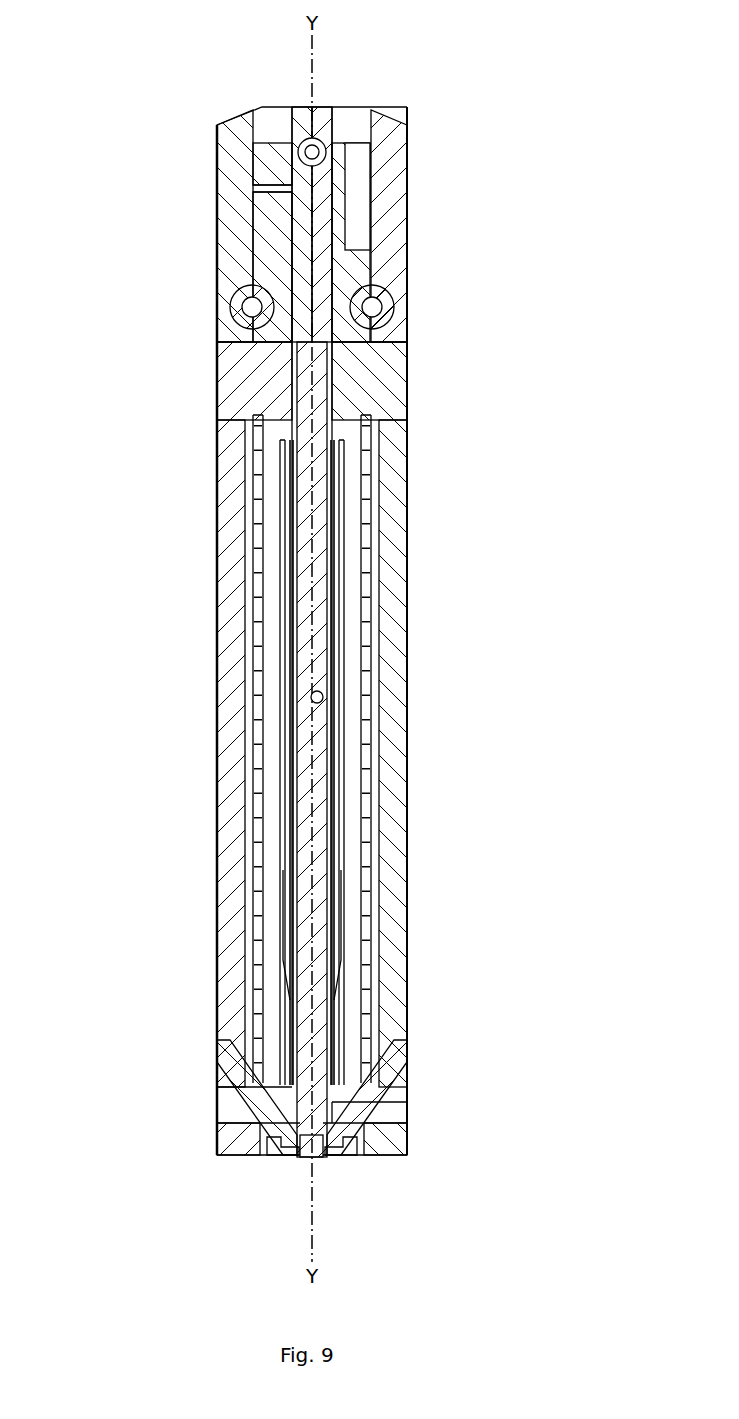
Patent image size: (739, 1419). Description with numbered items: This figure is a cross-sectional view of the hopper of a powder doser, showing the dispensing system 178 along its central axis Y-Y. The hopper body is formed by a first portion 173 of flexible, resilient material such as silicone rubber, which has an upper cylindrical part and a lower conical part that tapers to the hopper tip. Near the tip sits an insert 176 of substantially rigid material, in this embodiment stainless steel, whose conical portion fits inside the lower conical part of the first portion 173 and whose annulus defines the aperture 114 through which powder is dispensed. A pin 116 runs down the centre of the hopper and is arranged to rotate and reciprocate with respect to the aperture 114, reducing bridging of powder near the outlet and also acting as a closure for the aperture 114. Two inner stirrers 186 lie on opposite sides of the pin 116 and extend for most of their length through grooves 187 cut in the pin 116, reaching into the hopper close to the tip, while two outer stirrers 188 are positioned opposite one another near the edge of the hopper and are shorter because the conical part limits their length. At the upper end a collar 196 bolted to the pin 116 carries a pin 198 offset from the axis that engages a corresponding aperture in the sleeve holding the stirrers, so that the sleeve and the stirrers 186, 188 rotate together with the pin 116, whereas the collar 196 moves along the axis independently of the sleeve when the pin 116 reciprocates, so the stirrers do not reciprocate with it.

The first portion 173 is at (407, 793).
The collar 196 is at (275, 155).
The pin 198 is at (356, 197).
The outer stirrers 188 is at (258, 842).
The grooves 187 is at (290, 714).
The inner stirrers 186 is at (288, 1078).
The pin 116 is at (400, 1102).
The insert 176 is at (297, 1153).
The dispensing system 178 is at (345, 1157).
The aperture 114 is at (327, 1160).